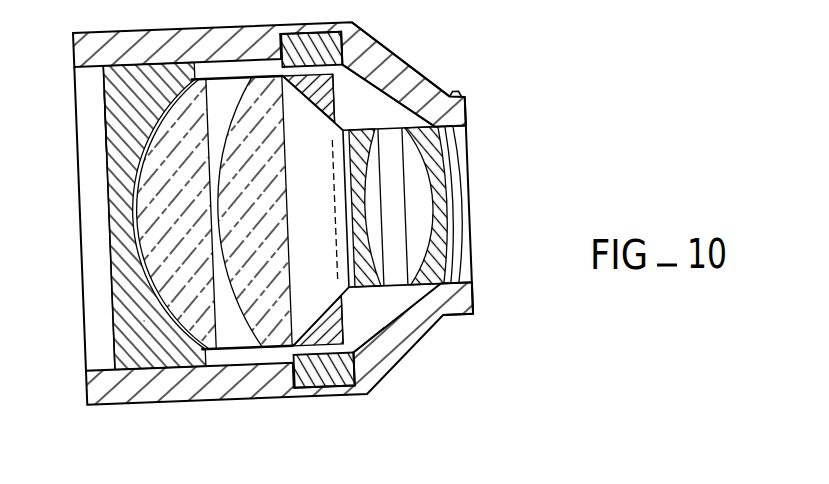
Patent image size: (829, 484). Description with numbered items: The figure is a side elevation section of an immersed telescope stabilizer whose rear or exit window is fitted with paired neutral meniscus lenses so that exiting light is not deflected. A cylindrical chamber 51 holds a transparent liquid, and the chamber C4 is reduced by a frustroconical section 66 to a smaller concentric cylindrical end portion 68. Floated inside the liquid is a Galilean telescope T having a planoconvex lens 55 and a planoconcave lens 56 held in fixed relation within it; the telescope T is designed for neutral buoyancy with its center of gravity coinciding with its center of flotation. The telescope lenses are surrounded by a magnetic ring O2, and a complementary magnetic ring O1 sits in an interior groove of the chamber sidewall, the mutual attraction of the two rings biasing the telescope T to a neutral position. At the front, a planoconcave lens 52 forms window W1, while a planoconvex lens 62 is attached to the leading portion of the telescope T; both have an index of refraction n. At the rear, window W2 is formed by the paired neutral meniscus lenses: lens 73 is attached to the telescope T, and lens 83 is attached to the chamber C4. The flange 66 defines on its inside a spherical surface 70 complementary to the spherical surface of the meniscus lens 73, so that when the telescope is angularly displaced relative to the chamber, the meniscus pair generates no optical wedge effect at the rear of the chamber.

The cylindrical chamber 51 is at (143, 407).
The planoconcave lens 52 is at (125, 313).
The planoconvex lens 55 is at (268, 194).
The planoconcave lens 56 is at (362, 245).
The planoconvex lens 62 is at (181, 194).
The frustroconical section 66 is at (423, 93).
The cylindrical end portion 68 is at (462, 97).
The spherical surface 70 is at (467, 314).
The neutral meniscus lens 73 is at (424, 222).
The neutral meniscus lens 83 is at (450, 183).
The window W1 is at (105, 113).
The window W2 is at (455, 264).
The magnetic ring O1 is at (313, 50).
The magnetic ring O2 is at (313, 87).
The chamber C4 is at (398, 88).
The telescope T is at (450, 352).
The index of refraction n is at (194, 314).